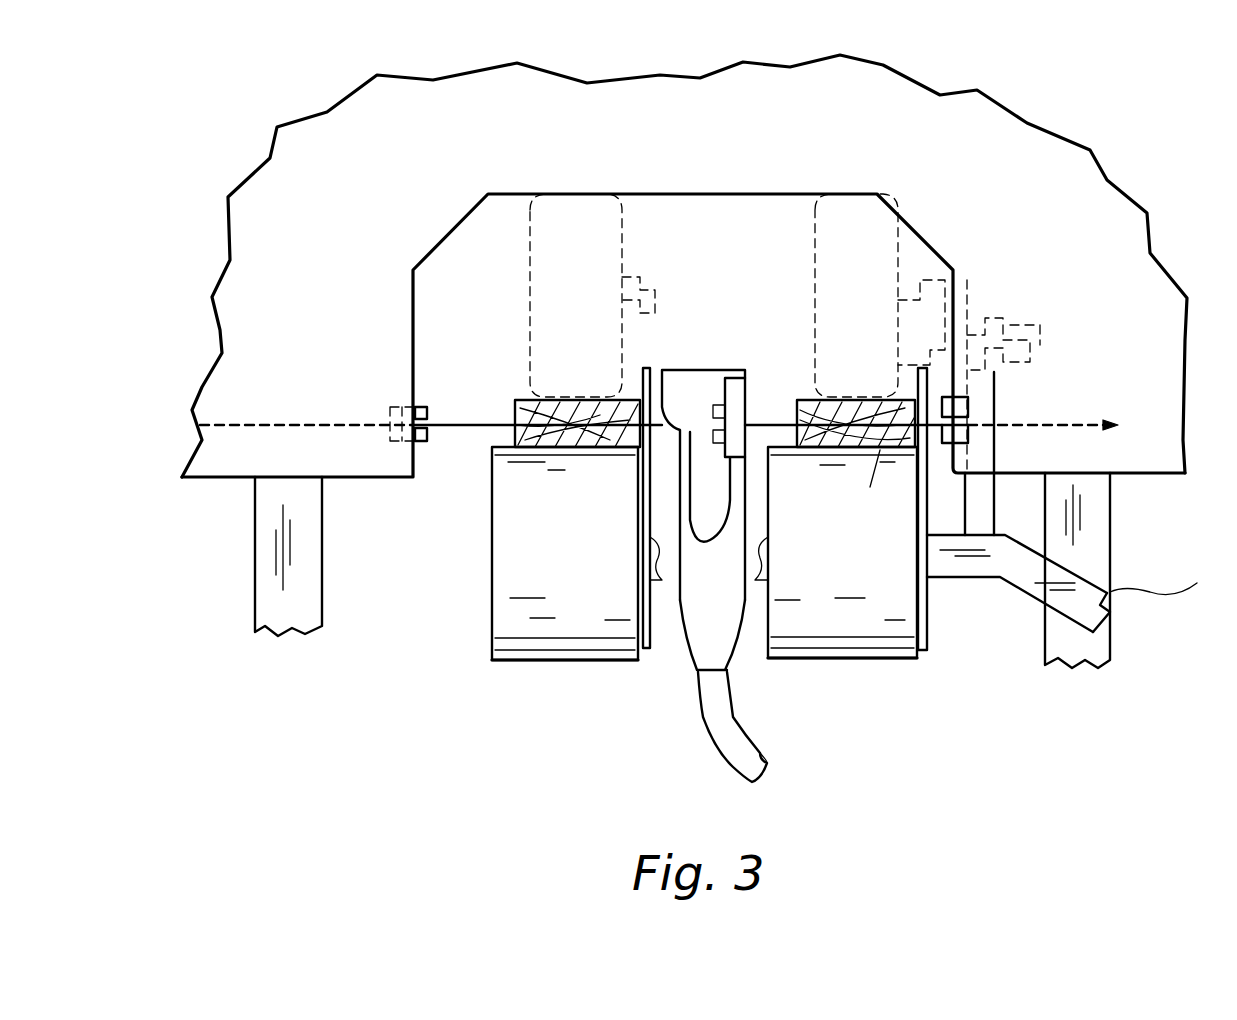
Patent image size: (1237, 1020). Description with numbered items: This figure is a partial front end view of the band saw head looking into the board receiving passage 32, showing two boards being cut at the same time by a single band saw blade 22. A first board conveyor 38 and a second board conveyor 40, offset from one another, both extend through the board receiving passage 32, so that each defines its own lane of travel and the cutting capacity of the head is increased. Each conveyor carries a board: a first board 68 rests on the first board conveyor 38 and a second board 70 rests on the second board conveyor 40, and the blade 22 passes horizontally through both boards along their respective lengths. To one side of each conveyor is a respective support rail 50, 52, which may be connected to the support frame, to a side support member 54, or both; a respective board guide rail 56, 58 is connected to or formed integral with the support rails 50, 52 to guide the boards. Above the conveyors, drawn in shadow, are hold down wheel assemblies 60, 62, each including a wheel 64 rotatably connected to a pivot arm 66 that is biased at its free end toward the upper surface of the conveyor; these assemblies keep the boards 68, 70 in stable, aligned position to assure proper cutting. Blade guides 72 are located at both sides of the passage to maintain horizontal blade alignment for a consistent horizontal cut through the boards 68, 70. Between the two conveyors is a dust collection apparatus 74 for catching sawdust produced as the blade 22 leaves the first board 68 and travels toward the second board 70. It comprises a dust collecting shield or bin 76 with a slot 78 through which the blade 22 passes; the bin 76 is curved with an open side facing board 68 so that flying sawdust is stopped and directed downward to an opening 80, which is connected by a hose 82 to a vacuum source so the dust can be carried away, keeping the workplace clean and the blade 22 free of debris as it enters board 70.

The band saw blade 22 is at (480, 421).
The board receiving passage 32 is at (746, 194).
The first board conveyor 38 is at (574, 672).
The second board conveyor 40 is at (885, 668).
The support rail 50 is at (653, 630).
The support rail 52 is at (930, 610).
The side support member 54 is at (1164, 571).
The board guide rail 56 is at (645, 368).
The board guide rail 58 is at (864, 489).
The hold down wheel assembly 60 is at (632, 232).
The hold down wheel assembly 62 is at (993, 286).
The wheel 64 is at (892, 197).
The pivot arm 66 is at (945, 258).
The board 68 is at (513, 440).
The board 70 is at (787, 445).
The blade guides 72 is at (427, 412).
The dust collection apparatus 74 is at (767, 355).
The dust collecting shield or bin 76 is at (707, 368).
The slot 78 is at (746, 420).
The opening 80 is at (698, 498).
The hose 82 is at (743, 725).